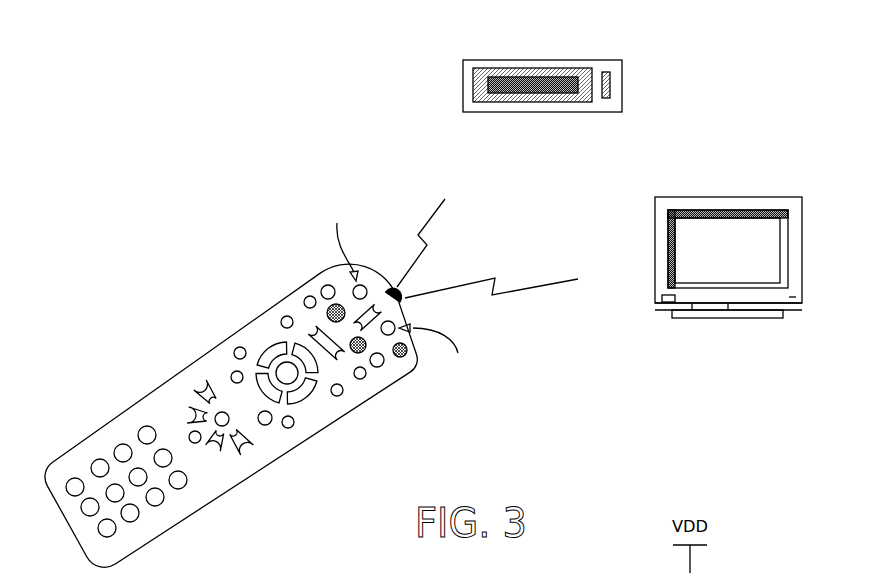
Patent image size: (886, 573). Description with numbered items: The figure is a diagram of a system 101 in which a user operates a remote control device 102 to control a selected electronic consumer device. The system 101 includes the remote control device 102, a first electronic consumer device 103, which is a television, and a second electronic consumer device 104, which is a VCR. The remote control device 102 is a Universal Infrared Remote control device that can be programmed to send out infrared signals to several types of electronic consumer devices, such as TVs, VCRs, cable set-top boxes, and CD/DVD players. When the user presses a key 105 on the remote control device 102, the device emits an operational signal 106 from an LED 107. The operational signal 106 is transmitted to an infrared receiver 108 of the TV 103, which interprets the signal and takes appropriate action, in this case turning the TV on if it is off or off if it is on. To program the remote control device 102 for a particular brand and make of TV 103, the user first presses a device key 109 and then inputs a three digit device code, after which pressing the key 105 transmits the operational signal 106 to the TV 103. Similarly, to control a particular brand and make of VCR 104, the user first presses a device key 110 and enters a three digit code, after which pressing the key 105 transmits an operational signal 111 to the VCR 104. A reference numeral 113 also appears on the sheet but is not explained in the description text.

The system 101 is at (263, 88).
The remote control device 102 is at (177, 375).
The first electronic consumer device 103 is at (802, 250).
The second electronic consumer device 104 is at (622, 82).
The key 105 is at (408, 359).
The operational signal 106 is at (587, 278).
The LED 107 is at (403, 303).
The infrared receiver 108 is at (667, 304).
The device key 109 is at (324, 283).
The device key 110 is at (385, 368).
The operational signal 111 is at (450, 193).
The circuit element 113 is at (558, 572).